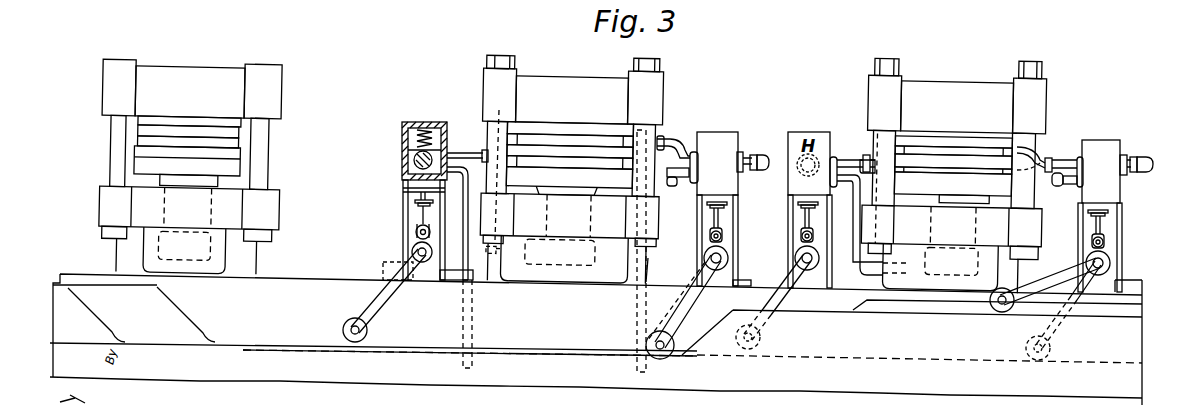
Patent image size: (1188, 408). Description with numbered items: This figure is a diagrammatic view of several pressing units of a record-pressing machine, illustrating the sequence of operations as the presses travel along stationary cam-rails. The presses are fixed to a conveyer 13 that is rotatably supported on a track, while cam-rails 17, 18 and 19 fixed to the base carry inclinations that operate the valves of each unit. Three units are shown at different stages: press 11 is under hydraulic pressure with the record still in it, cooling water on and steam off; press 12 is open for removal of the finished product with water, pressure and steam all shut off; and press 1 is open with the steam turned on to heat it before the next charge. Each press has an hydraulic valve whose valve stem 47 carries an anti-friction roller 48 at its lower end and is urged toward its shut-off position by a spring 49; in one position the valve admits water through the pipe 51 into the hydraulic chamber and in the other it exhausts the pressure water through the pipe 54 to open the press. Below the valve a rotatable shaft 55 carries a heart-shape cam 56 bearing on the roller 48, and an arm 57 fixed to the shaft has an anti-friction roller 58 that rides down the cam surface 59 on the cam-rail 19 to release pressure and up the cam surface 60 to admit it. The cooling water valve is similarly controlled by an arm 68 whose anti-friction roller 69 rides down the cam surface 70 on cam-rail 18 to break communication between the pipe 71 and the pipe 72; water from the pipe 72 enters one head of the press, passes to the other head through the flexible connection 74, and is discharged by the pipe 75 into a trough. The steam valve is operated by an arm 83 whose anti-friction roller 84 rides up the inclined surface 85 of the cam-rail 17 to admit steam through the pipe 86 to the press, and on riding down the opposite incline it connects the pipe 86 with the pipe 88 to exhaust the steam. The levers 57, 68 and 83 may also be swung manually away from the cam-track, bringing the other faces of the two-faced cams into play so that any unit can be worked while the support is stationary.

The press 1 is at (953, 176).
The press 11 is at (190, 167).
The press 12 is at (571, 169).
The conveyer 13 is at (277, 276).
The cam-rail 17 is at (248, 347).
The cam-rail 18 is at (73, 308).
The cam-rail 19 is at (70, 264).
The valve stem 47 is at (418, 202).
The anti-friction roller 48 is at (416, 226).
The spring 49 is at (422, 132).
The pipe 51 is at (458, 150).
The pipe 54 is at (468, 262).
The rotatable shaft 55 is at (412, 252).
The heart-shape cam 56 is at (410, 240).
The arm 57 is at (383, 295).
The anti-friction roller 58 is at (343, 320).
The cam surface 59 is at (190, 318).
The cam surface 60 is at (858, 313).
The arm 68 is at (672, 297).
The anti-friction roller 69 is at (643, 337).
The cam surface 70 is at (102, 327).
The pipe 71 is at (749, 155).
The pipe 72 is at (679, 147).
The flexible connection 74 is at (497, 165).
The pipe 75 is at (641, 273).
The arm 83 is at (697, 315).
The anti-friction roller 84 is at (664, 359).
The inclined surface 85 is at (708, 335).
The pipe 86 is at (664, 143).
The pipe 88 is at (686, 182).